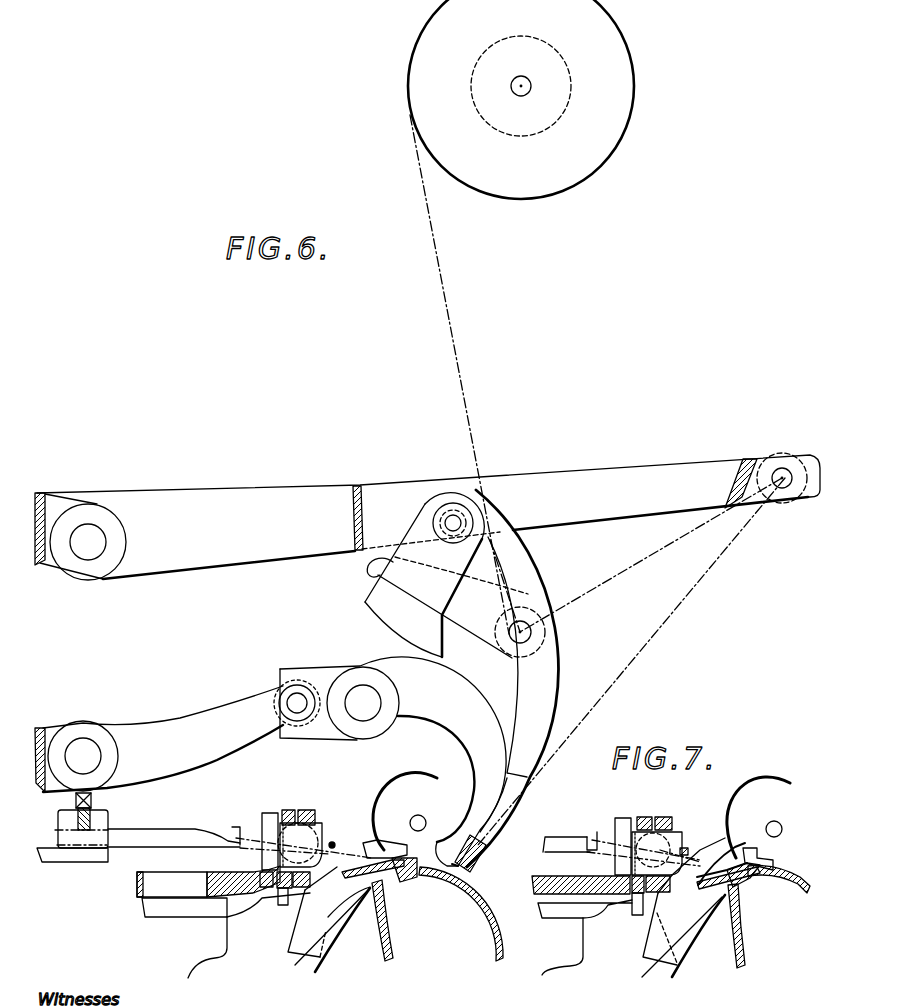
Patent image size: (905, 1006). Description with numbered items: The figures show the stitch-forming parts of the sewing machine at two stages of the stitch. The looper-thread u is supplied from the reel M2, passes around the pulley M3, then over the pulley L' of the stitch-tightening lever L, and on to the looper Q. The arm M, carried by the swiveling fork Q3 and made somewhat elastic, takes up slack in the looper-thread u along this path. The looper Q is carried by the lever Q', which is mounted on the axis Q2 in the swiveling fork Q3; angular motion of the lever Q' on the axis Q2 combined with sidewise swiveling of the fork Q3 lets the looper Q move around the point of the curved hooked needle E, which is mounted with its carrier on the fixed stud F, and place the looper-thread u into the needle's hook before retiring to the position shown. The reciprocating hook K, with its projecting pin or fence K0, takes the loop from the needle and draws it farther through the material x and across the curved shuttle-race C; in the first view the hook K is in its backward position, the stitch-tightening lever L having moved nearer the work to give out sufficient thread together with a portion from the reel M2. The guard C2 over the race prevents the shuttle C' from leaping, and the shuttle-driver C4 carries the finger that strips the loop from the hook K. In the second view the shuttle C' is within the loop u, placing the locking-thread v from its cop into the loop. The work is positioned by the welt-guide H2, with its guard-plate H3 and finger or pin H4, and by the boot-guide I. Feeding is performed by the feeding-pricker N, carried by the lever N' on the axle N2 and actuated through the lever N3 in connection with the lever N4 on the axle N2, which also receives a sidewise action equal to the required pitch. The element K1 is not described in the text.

In FIG. 6, the reel M2 is at (521, 99).
In FIG. 6, the looper-thread u is at (446, 283).
In FIG. 7, the looper-thread u is at (690, 838).
In FIG. 6, the stitch-tightening lever L is at (427, 517).
In FIG. 6, the pulley of the stitch-tightening lever L' is at (767, 494).
In FIG. 6, the looper lever Q' is at (451, 594).
In FIG. 6, the axis of the looper lever Q2 is at (456, 521).
In FIG. 6, the swiveling fork Q3 is at (440, 523).
In FIG. 6, the looper Q is at (461, 681).
In FIG. 7, the looper Q is at (543, 821).
In FIG. 6, the arm M is at (453, 627).
In FIG. 6, the pulley M3 is at (535, 647).
In FIG. 6, the pricker lever N' is at (393, 761).
In FIG. 6, the axle N2 is at (363, 703).
In FIG. 6, the lever N3 is at (159, 739).
In FIG. 6, the lever N4 is at (281, 670).
In FIG. 6, the feeding-pricker N is at (475, 869).
In FIG. 6, the reciprocating hook K is at (240, 835).
In FIG. 7, the reciprocating hook K is at (548, 850).
In FIG. 6, the projecting pin or fence K0 is at (241, 820).
In FIG. 7, the projecting pin or fence K0 is at (600, 836).
In FIG. 6, the block K1 is at (72, 836).
In FIG. 6, the curved shuttle-race C is at (223, 922).
In FIG. 7, the curved shuttle-race C is at (582, 925).
In FIG. 6, the shuttle C' is at (308, 836).
In FIG. 7, the shuttle C' is at (664, 846).
In FIG. 6, the guard over the race C2 is at (310, 812).
In FIG. 7, the guard over the race C2 is at (665, 816).
In FIG. 6, the shuttle-driver C4 is at (281, 905).
In FIG. 7, the shuttle-driver C4 is at (634, 910).
In FIG. 6, the locking-thread v is at (334, 843).
In FIG. 6, the curved hooked needle E is at (405, 801).
In FIG. 7, the curved hooked needle E is at (758, 817).
In FIG. 6, the fixed stud F is at (424, 816).
In FIG. 7, the fixed stud F is at (780, 822).
In FIG. 6, the welt-guide H2 is at (373, 869).
In FIG. 7, the welt-guide H2 is at (716, 863).
In FIG. 6, the guard-plate H3 is at (387, 885).
In FIG. 7, the guard-plate H3 is at (743, 892).
In FIG. 6, the finger or pin H4 is at (408, 845).
In FIG. 7, the finger or pin H4 is at (760, 855).
In FIG. 6, the material x is at (461, 914).
In FIG. 7, the material x is at (742, 940).
In FIG. 6, the boot-guide I is at (345, 933).
In FIG. 7, the boot-guide I is at (700, 937).